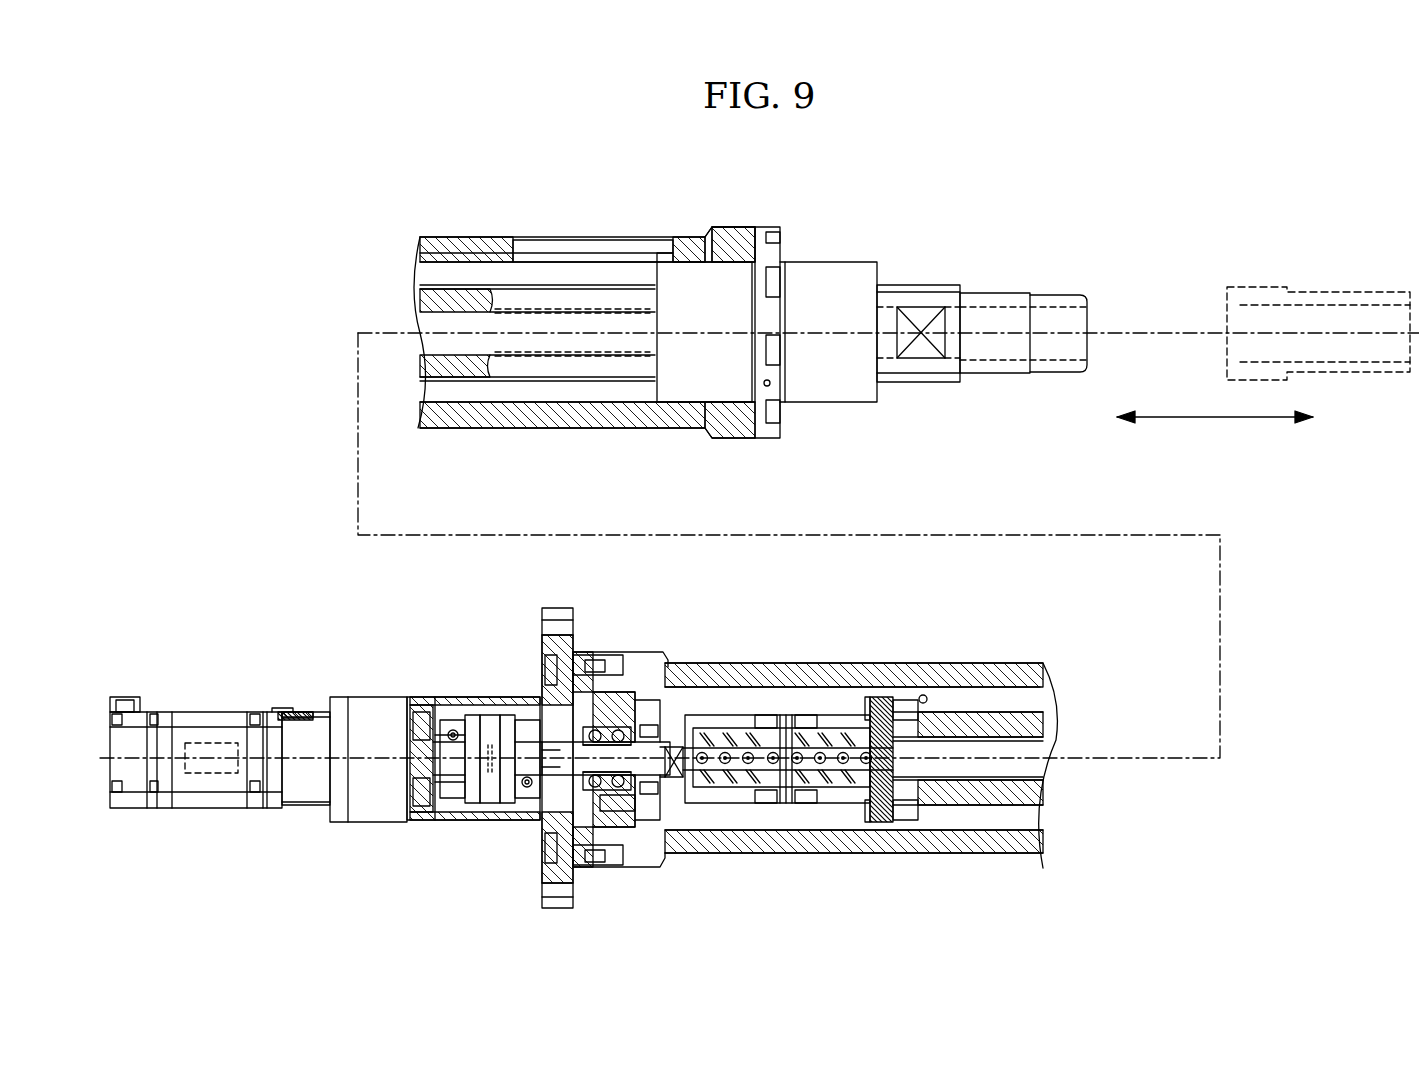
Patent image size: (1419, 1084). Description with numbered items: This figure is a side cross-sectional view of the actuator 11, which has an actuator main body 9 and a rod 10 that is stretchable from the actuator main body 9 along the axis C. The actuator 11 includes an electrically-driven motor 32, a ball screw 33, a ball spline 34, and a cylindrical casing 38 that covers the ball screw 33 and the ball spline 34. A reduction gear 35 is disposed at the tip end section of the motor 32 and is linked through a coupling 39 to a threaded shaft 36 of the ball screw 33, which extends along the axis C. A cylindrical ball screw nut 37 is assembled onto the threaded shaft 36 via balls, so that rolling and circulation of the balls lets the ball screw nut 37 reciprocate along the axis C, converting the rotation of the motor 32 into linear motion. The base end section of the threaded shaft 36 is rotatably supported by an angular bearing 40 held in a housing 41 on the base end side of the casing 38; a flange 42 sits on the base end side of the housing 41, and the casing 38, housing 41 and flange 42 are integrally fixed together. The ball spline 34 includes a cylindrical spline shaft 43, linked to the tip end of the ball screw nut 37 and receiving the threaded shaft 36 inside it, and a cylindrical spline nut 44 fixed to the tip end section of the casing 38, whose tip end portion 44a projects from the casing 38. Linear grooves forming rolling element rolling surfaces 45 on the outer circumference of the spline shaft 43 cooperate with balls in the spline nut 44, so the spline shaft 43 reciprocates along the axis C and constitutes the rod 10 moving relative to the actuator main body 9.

The actuator main body 9 is at (724, 224).
The rod 10 is at (928, 284).
The actuator 11 is at (1073, 162).
The electrically-driven motor 32 is at (185, 716).
The ball screw 33 is at (727, 715).
The ball spline 34 is at (467, 284).
The reduction gear 35 is at (305, 726).
The threaded shaft 36 is at (673, 781).
The ball screw nut 37 is at (832, 797).
The casing 38 is at (876, 673).
The coupling 39 is at (489, 724).
The angular bearing 40 is at (597, 800).
The housing 41 is at (607, 650).
The flange 42 is at (552, 606).
The spline shaft 43 is at (975, 718).
The spline nut 44 is at (695, 285).
The tip end portion 44a is at (827, 283).
The rolling element rolling surfaces 45 is at (594, 283).
The axis C is at (1160, 333).